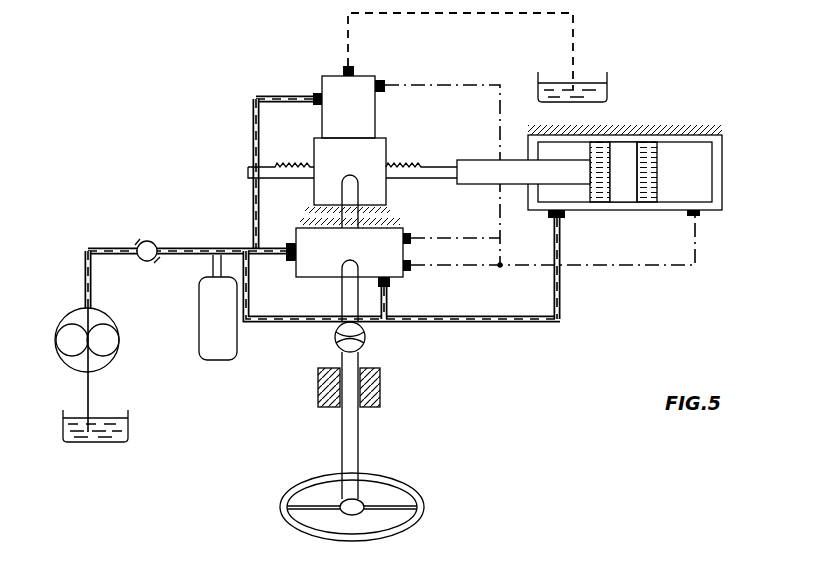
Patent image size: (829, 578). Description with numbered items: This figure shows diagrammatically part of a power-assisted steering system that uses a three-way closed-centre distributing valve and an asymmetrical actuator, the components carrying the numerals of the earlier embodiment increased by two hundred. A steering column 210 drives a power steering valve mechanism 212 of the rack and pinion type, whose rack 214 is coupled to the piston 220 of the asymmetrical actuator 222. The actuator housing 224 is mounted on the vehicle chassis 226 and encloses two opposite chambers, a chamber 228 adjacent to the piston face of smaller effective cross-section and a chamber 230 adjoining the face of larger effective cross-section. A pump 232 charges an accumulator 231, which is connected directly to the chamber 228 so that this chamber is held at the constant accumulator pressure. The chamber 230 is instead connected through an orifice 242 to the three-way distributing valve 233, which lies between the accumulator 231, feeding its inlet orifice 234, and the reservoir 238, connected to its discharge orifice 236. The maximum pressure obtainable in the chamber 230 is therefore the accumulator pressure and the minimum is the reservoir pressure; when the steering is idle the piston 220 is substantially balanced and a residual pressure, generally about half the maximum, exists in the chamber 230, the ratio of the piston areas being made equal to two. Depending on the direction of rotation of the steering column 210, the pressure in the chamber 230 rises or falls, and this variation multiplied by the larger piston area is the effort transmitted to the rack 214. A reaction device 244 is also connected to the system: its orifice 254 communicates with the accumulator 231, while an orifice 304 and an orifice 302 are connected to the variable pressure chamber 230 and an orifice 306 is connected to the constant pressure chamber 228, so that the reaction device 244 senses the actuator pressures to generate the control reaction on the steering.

The steering column 210 is at (340, 450).
The power steering valve mechanism 212 is at (302, 196).
The rack 214 is at (396, 166).
The piston 220 is at (622, 190).
The actuator 222 is at (617, 181).
The housing 224 is at (722, 138).
The vehicle chassis 226 is at (688, 128).
The chamber 228 is at (572, 195).
The chamber 230 is at (682, 190).
The accumulator 231 is at (199, 284).
The pump 232 is at (120, 333).
The three-way distributing valve 233 is at (342, 120).
The inlet orifice 234 is at (317, 94).
The discharge orifice 236 is at (346, 66).
The reservoir 238 is at (590, 74).
The orifice 242 is at (403, 70).
The reaction device 244 is at (325, 268).
The orifice 254 is at (290, 262).
The orifice 302 is at (408, 232).
The orifice 304 is at (410, 269).
The orifice 306 is at (395, 286).